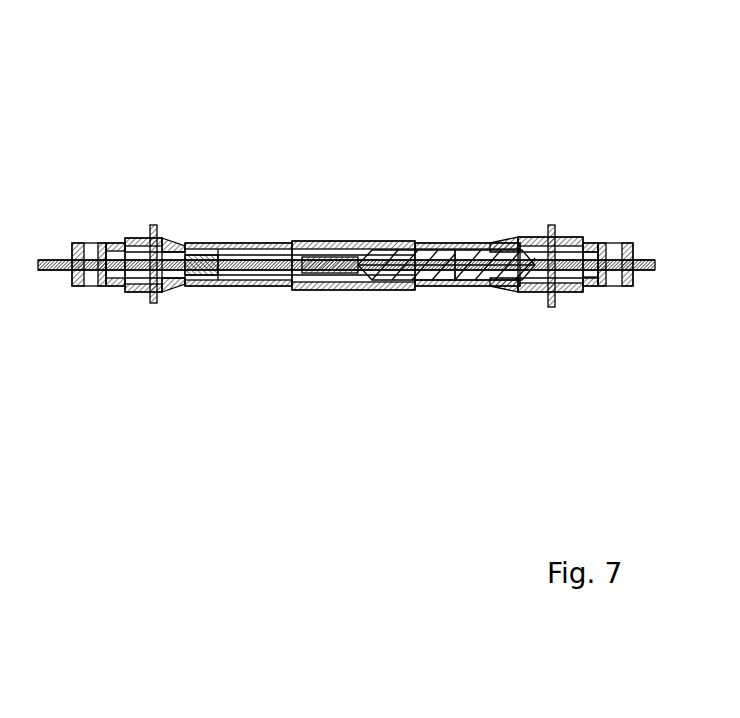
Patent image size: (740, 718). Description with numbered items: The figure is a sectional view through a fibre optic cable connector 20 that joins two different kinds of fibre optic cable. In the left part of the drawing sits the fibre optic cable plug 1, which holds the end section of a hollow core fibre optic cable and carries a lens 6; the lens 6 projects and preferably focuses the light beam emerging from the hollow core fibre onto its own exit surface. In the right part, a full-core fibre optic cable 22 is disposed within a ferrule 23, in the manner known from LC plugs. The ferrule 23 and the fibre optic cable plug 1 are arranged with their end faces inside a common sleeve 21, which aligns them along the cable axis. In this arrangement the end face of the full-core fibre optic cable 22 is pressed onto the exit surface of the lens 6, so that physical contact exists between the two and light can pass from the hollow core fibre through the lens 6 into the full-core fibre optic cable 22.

The fibre optic cable connector 20 is at (307, 113).
The fibre optic cable plug 1 is at (215, 247).
The sleeve 21 is at (395, 243).
The full-core fibre optic cable 22 is at (445, 243).
The ferrule 23 is at (487, 243).
The lens 6 is at (348, 272).